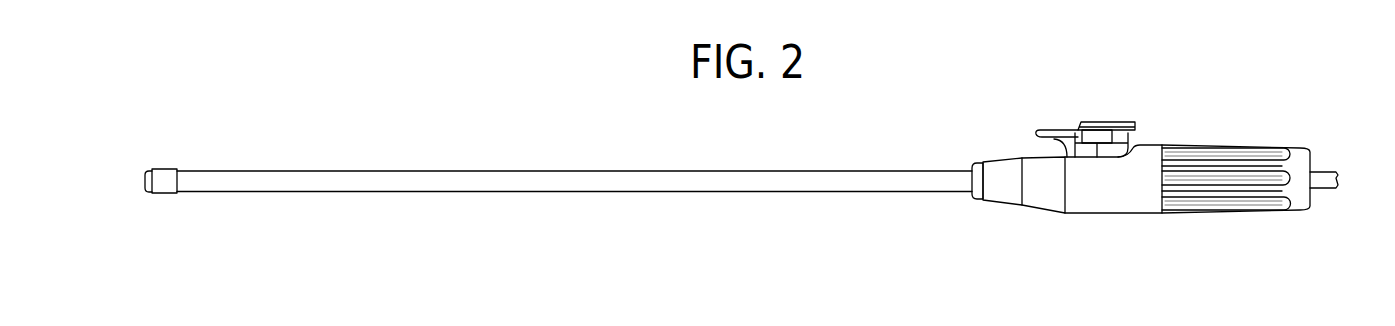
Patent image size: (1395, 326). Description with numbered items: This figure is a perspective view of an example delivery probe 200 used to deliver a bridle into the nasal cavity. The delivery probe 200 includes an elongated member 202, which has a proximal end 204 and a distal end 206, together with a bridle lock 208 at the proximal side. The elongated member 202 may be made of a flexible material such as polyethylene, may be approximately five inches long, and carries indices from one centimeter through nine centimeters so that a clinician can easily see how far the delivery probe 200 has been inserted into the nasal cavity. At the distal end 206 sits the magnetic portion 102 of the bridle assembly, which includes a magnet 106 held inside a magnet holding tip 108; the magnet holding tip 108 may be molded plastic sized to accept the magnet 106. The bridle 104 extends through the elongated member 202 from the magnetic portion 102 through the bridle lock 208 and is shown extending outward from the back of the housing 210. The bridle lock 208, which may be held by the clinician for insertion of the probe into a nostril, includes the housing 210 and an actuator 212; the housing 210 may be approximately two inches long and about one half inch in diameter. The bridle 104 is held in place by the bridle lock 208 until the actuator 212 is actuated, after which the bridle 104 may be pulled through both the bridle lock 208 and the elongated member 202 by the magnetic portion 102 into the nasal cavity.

The delivery probe 200 is at (663, 136).
The magnetic portion 102 is at (153, 165).
The bridle 104 is at (1325, 180).
The magnet 106 is at (145, 182).
The magnet holding tip 108 is at (164, 181).
The elongated member 202 is at (501, 177).
The proximal end 204 is at (943, 161).
The distal end 206 is at (243, 161).
The bridle lock 208 is at (1262, 113).
The housing 210 is at (1100, 203).
The actuator 212 is at (1110, 117).